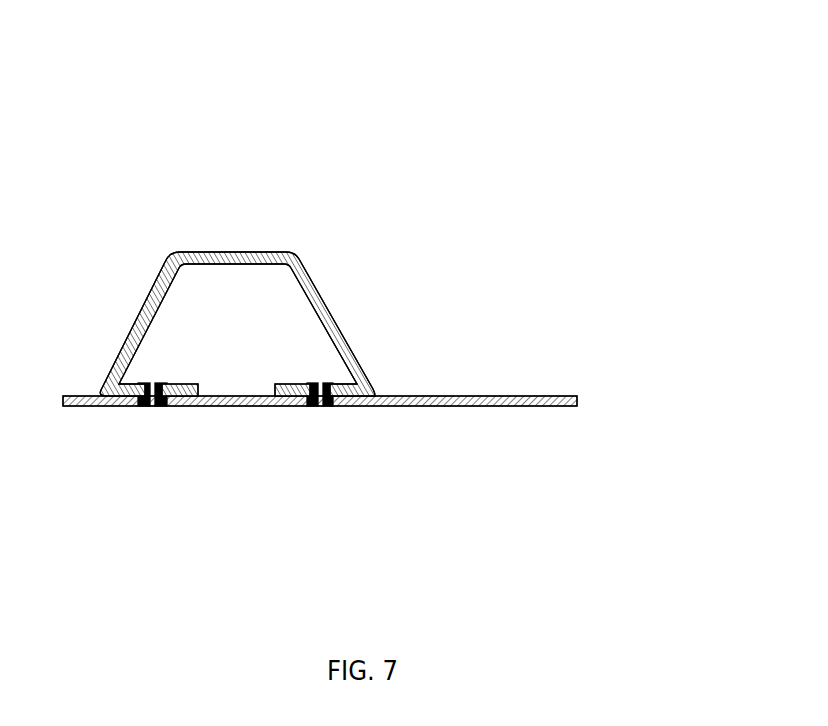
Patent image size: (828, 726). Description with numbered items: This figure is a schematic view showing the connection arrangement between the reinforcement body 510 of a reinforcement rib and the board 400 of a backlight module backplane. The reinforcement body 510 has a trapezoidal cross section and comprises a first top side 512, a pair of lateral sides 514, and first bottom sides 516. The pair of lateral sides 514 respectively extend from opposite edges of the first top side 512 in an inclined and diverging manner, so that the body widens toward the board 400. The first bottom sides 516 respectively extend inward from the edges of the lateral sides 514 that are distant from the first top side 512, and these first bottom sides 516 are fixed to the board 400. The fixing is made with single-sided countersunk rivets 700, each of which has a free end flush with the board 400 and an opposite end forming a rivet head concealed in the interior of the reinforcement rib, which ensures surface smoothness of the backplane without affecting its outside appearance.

The board 400 is at (453, 397).
The reinforcement body 510 is at (237, 201).
The first top side 512 is at (232, 253).
The lateral sides 514 is at (150, 295).
The first bottom sides 516 is at (192, 386).
The single-sided countersunk rivet 700 is at (165, 408).